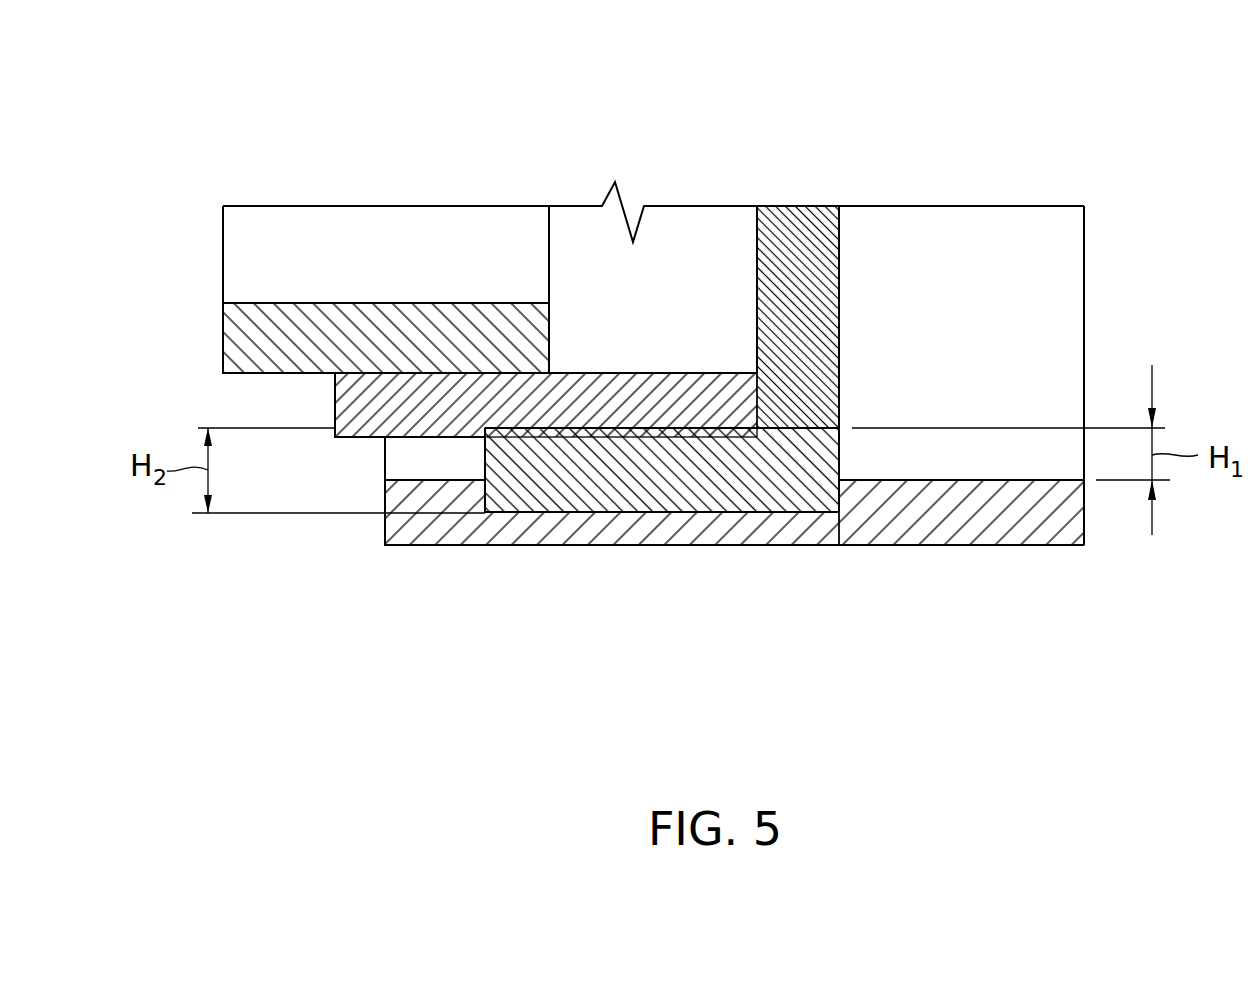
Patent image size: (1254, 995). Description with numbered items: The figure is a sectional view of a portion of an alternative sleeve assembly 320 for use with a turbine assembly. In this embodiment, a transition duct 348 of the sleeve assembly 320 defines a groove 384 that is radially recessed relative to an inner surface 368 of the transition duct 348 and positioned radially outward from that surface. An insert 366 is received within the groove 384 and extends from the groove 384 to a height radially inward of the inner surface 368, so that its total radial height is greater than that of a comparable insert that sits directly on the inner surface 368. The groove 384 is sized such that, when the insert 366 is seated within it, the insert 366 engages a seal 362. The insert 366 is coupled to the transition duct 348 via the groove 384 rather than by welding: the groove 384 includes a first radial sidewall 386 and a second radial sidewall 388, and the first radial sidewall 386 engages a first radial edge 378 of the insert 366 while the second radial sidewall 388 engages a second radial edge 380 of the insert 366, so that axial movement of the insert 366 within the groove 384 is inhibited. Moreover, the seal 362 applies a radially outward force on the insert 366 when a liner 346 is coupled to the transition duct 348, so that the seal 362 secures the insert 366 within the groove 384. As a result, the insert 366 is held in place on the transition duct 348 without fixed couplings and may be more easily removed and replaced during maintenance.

The sleeve assembly 320 is at (1097, 130).
The liner 346 is at (273, 335).
The transition duct 348 is at (1022, 502).
The seal 362 is at (578, 400).
The insert 366 is at (663, 478).
The inner surface 368 is at (913, 480).
The first radial edge 378 is at (483, 459).
The second radial edge 380 is at (839, 453).
The groove 384 is at (820, 535).
The first radial sidewall 386 is at (483, 512).
The second radial sidewall 388 is at (839, 500).